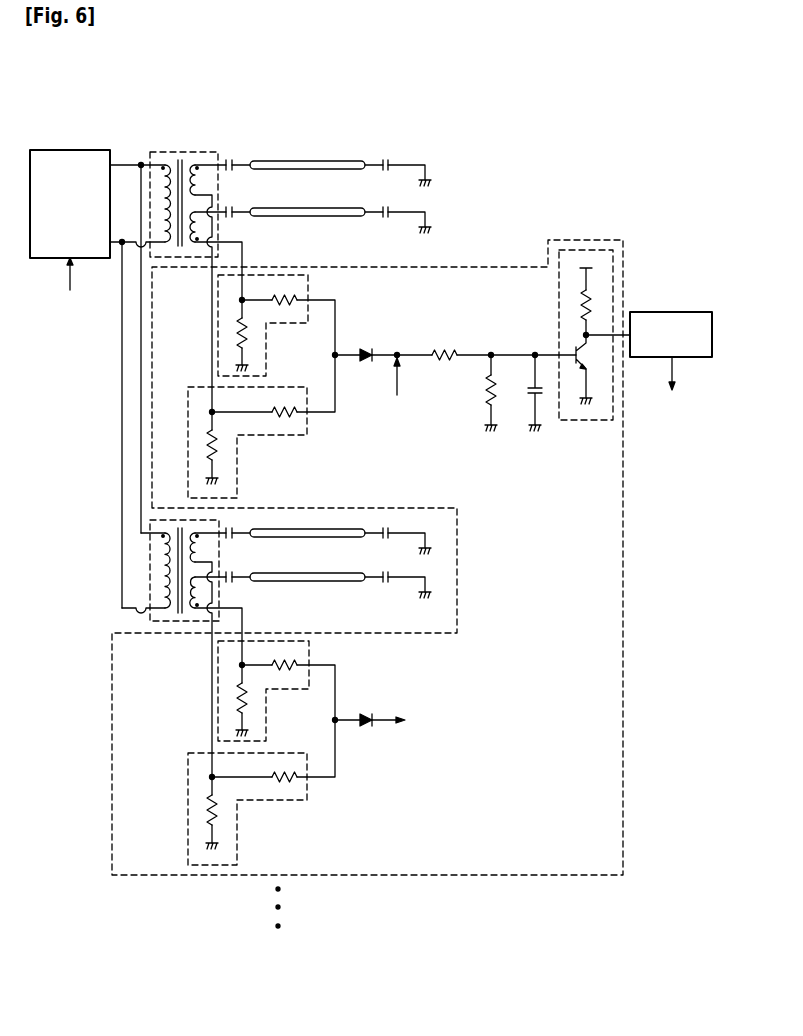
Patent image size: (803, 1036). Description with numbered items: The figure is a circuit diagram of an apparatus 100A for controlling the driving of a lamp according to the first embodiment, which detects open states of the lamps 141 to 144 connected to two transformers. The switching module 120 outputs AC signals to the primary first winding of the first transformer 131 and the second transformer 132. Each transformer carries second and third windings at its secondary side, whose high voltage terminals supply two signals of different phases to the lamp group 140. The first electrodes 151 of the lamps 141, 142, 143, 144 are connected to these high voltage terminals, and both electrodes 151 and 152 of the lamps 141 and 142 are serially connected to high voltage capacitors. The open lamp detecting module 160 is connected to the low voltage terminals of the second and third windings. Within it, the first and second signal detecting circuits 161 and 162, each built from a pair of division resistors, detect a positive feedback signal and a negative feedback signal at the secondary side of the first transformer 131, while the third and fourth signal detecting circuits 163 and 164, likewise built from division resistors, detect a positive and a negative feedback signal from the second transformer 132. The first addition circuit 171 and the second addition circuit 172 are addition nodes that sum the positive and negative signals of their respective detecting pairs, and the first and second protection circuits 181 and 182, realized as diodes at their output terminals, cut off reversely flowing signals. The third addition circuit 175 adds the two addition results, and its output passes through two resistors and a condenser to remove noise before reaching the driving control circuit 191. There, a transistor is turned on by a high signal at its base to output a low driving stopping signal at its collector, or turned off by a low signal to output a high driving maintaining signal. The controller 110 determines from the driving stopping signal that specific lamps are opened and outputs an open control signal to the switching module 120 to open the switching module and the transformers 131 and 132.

The apparatus for controlling the driving of a lamp 100A is at (98, 56).
The controller 110 is at (672, 311).
The switching module 120 is at (72, 148).
The first transformer 131 is at (185, 152).
The second transformer 132 is at (168, 520).
The lamps 140 is at (313, 169).
The lamp 141 is at (307, 160).
The lamp 142 is at (307, 220).
The lamp 143 is at (305, 528).
The lamp 144 is at (307, 583).
The first electrode 151 is at (244, 158).
The second electrode 152 is at (374, 158).
The open lamp detecting module 160 is at (489, 266).
The first signal detecting circuit 161 is at (238, 463).
The second signal detecting circuit 162 is at (218, 300).
The third signal detecting circuit 163 is at (188, 787).
The fourth signal detecting circuit 164 is at (218, 665).
The first addition circuit 171 is at (338, 352).
The second addition circuit 172 is at (338, 718).
The third addition circuit 175 is at (398, 352).
The first protection circuit 181 is at (366, 362).
The second protection circuit 182 is at (366, 727).
The driving control circuit 191 is at (585, 250).